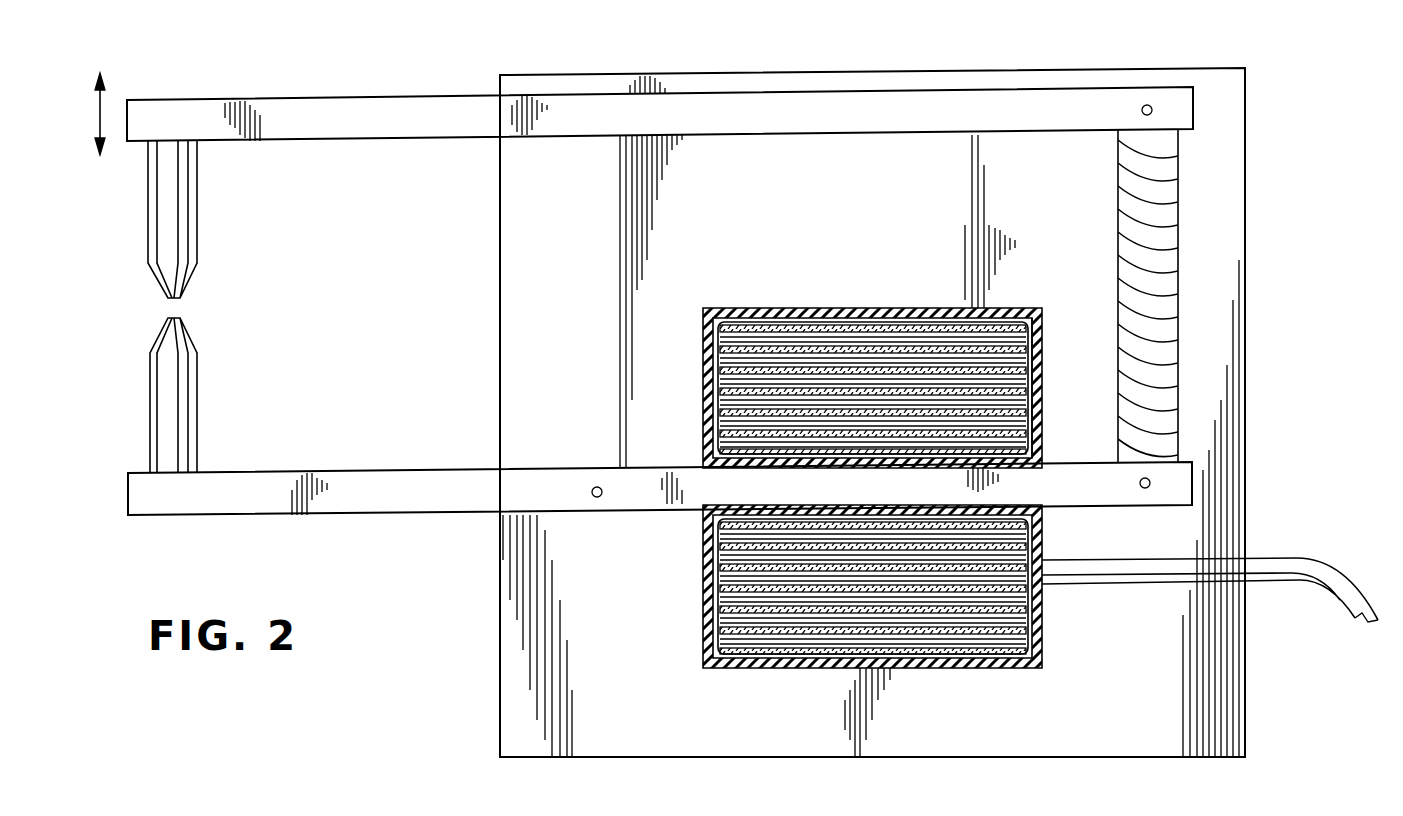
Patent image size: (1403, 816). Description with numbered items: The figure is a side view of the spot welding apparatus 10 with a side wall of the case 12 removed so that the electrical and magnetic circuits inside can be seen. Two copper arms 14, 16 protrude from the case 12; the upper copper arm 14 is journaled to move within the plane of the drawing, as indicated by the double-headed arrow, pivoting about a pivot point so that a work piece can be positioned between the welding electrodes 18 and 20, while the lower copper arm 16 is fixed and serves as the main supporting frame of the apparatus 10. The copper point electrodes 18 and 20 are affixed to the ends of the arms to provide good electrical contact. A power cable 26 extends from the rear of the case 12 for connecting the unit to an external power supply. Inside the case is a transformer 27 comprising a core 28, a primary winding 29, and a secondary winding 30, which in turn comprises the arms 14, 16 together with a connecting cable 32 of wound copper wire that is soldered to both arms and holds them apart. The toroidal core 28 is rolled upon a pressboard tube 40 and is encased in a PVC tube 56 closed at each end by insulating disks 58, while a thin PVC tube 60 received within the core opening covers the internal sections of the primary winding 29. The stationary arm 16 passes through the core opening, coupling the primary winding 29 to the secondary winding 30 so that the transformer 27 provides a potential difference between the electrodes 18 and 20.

The spot welding apparatus 10 is at (428, 642).
The case 12 is at (1178, 68).
The copper arm 14 is at (343, 98).
The copper arm 16 is at (332, 515).
The welding electrode 18 is at (197, 236).
The welding electrode 20 is at (197, 410).
The power cable 26 is at (1302, 557).
The transformer 27 is at (645, 440).
The core 28 is at (838, 433).
The primary winding 29 is at (725, 362).
The secondary winding 30 is at (1135, 295).
The connecting cable 32 is at (1167, 330).
The pressboard tube 40 is at (698, 512).
The PVC tube 56 is at (875, 305).
The insulating disk 58 is at (1045, 350).
The thin PVC tube 60 is at (1045, 457).